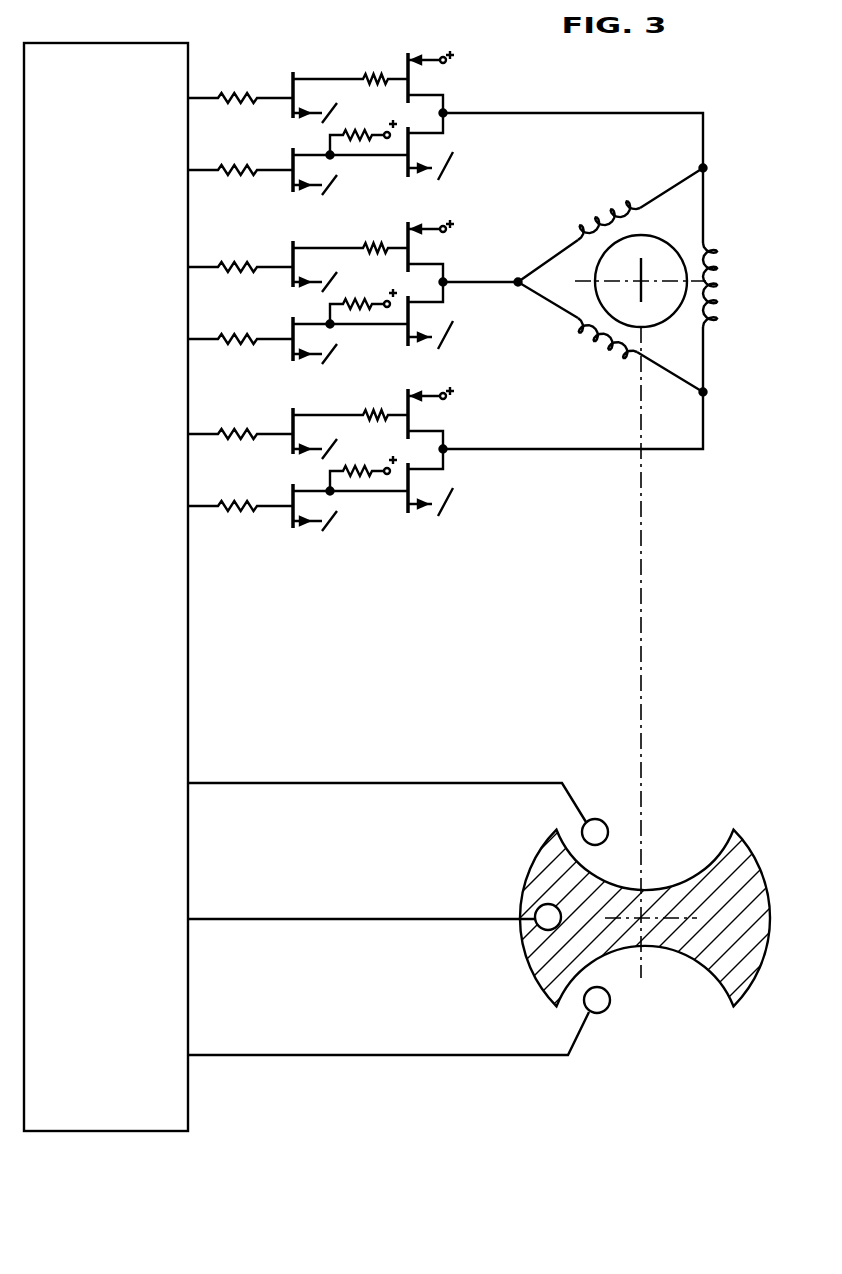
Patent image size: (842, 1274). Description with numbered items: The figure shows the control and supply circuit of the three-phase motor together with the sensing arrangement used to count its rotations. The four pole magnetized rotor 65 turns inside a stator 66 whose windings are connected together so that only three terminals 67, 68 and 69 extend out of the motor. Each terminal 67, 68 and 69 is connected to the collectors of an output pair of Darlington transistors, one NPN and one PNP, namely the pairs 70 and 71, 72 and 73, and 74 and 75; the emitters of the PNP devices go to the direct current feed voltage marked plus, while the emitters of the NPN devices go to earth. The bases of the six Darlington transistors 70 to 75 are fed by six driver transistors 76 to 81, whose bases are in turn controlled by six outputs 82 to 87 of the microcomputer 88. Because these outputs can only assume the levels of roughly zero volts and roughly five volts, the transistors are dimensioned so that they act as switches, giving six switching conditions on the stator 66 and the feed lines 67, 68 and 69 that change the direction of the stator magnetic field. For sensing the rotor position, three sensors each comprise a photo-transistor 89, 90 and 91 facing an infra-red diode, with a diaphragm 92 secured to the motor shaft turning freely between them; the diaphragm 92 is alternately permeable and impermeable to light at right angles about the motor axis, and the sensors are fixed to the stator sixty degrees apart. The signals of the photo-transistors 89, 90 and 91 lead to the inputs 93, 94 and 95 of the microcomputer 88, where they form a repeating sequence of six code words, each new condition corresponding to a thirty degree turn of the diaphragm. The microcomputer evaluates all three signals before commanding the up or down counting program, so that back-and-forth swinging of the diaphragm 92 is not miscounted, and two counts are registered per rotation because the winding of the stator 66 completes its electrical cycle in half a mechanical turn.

The four pole magnetized rotor 65 is at (662, 247).
The stator 66 is at (624, 280).
The terminal 67 is at (573, 126).
The terminal 68 is at (480, 271).
The terminal 69 is at (573, 420).
The Darlington transistor 70 is at (431, 84).
The Darlington transistor 71 is at (390, 146).
The Darlington transistor 72 is at (431, 253).
The Darlington transistor 73 is at (390, 315).
The Darlington transistor 74 is at (431, 420).
The Darlington transistor 75 is at (390, 482).
The driver transistor 76 is at (350, 97).
The driver transistor 77 is at (350, 171).
The driver transistor 78 is at (350, 266).
The driver transistor 79 is at (350, 340).
The driver transistor 80 is at (350, 433).
The driver transistor 81 is at (350, 507).
The output 82 is at (226, 97).
The output 83 is at (226, 169).
The output 84 is at (226, 266).
The output 85 is at (226, 338).
The output 86 is at (226, 433).
The output 87 is at (226, 505).
The microcomputer 88 is at (180, 648).
The photo-transistor 89 is at (594, 818).
The photo-transistor 90 is at (536, 908).
The photo-transistor 91 is at (604, 1011).
The diaphragm 92 is at (711, 860).
The input 93 is at (373, 796).
The input 94 is at (347, 918).
The input 95 is at (374, 1039).